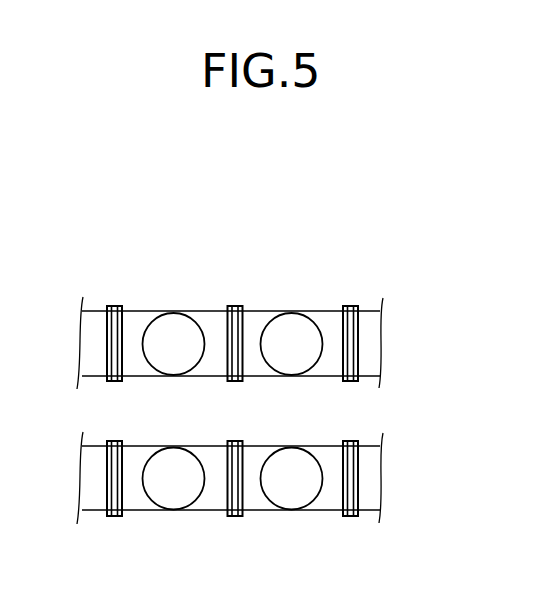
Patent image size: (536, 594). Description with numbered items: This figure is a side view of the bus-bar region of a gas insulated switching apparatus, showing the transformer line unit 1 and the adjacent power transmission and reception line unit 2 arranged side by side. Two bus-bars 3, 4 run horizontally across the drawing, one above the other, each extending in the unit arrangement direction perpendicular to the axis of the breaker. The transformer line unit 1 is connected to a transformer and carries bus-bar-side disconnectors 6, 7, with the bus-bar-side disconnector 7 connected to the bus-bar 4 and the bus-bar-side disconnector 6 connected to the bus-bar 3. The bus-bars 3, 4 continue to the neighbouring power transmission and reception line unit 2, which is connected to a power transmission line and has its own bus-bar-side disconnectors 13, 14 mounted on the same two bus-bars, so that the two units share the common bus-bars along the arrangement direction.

The transformer line unit 1 is at (167, 240).
The power transmission and reception line unit 2 is at (276, 240).
The bus-bar 3 is at (86, 446).
The bus-bar 4 is at (86, 311).
The bus-bar-side disconnector 6 is at (199, 446).
The bus-bar-side disconnector 7 is at (199, 311).
The bus-bar-side disconnector 13 is at (323, 446).
The bus-bar-side disconnector 14 is at (323, 311).